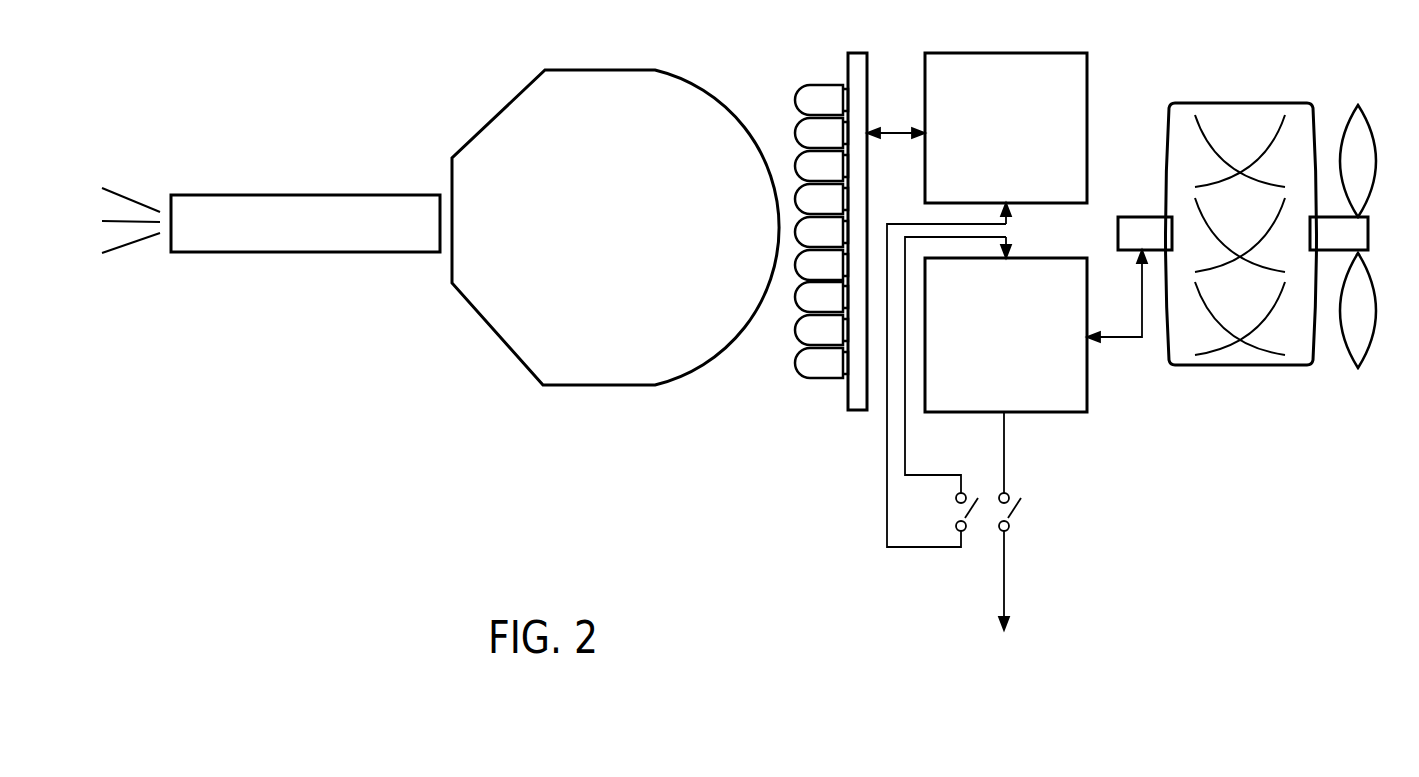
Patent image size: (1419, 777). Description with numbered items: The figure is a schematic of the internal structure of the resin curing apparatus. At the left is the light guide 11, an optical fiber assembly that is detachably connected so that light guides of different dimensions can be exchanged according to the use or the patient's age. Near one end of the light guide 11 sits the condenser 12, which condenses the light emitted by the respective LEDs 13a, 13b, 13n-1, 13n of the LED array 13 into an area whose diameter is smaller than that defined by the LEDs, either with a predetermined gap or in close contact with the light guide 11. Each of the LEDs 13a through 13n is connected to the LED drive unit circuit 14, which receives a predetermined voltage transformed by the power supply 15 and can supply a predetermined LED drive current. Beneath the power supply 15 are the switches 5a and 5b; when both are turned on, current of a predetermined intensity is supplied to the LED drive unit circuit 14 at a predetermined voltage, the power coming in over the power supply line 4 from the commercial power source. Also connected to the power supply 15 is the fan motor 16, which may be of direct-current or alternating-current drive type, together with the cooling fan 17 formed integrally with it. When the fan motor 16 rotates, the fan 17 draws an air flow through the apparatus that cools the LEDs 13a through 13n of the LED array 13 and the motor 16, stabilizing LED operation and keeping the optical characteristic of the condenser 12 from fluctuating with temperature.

The power supply line 4 is at (1000, 649).
The switch 5a is at (1025, 516).
The switch 5b is at (976, 516).
The light guide 11 is at (301, 241).
The condenser 12 is at (601, 374).
The LED array 13 is at (857, 54).
The LED 13a is at (826, 368).
The LED 13b is at (802, 331).
The LED 13n-1 is at (801, 131).
The LED 13n is at (825, 88).
The LED drive unit circuit 14 is at (1007, 53).
The power supply 15 is at (1045, 412).
The fan motor 16 is at (1243, 103).
The cooling fan 17 is at (1355, 368).